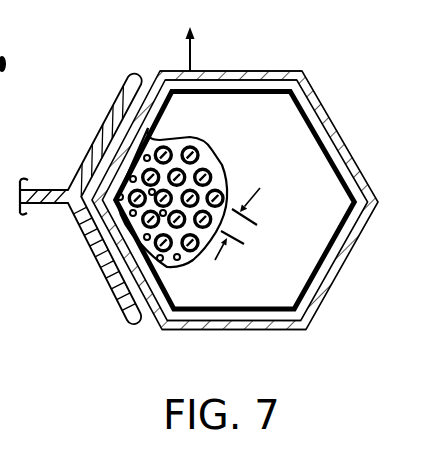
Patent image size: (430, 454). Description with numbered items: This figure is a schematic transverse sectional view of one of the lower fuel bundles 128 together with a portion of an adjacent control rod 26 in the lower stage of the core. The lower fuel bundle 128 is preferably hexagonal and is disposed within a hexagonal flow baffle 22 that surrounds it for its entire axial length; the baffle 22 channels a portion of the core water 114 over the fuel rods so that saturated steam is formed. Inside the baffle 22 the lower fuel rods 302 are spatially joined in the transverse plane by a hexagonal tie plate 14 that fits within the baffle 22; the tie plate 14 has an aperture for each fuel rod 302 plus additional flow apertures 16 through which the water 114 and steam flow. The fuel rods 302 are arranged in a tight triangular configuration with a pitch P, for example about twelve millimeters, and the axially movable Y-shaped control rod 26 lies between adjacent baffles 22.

The tie plate 14 is at (240, 196).
The flow apertures 16 is at (181, 261).
The flow baffle 22 is at (247, 331).
The control rod 26 is at (93, 143).
The core water 114 is at (192, 64).
The lower fuel bundle 128 is at (278, 58).
The lower fuel rod 302 is at (211, 178).
The pitch P is at (260, 190).